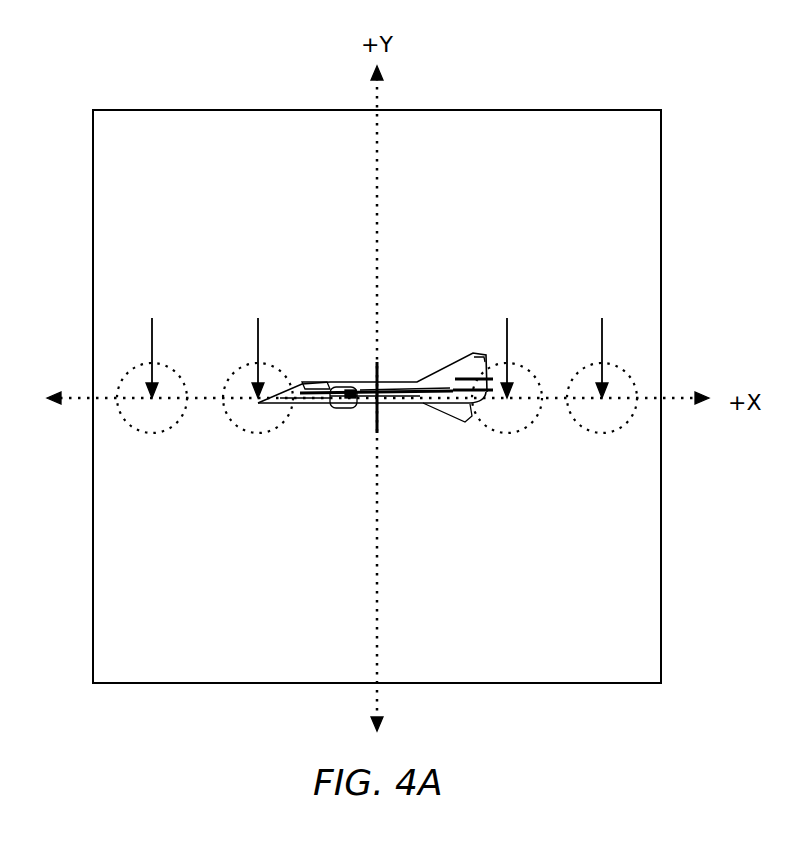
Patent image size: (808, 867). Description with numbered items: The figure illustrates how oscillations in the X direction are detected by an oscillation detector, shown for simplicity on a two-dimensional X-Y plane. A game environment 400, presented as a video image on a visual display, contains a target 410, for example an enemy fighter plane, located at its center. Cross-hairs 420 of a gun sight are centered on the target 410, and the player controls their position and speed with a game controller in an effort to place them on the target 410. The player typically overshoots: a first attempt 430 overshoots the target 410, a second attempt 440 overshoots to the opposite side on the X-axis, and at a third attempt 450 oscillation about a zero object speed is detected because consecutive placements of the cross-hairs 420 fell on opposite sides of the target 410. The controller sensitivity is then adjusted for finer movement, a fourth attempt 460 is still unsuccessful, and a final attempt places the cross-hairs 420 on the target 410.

The game environment 400 is at (661, 111).
The target 410 is at (318, 395).
The cross-hairs 420 is at (447, 283).
The first attempt 430 is at (602, 465).
The second attempt 440 is at (152, 465).
The third attempt 450 is at (507, 465).
The fourth attempt 460 is at (260, 465).